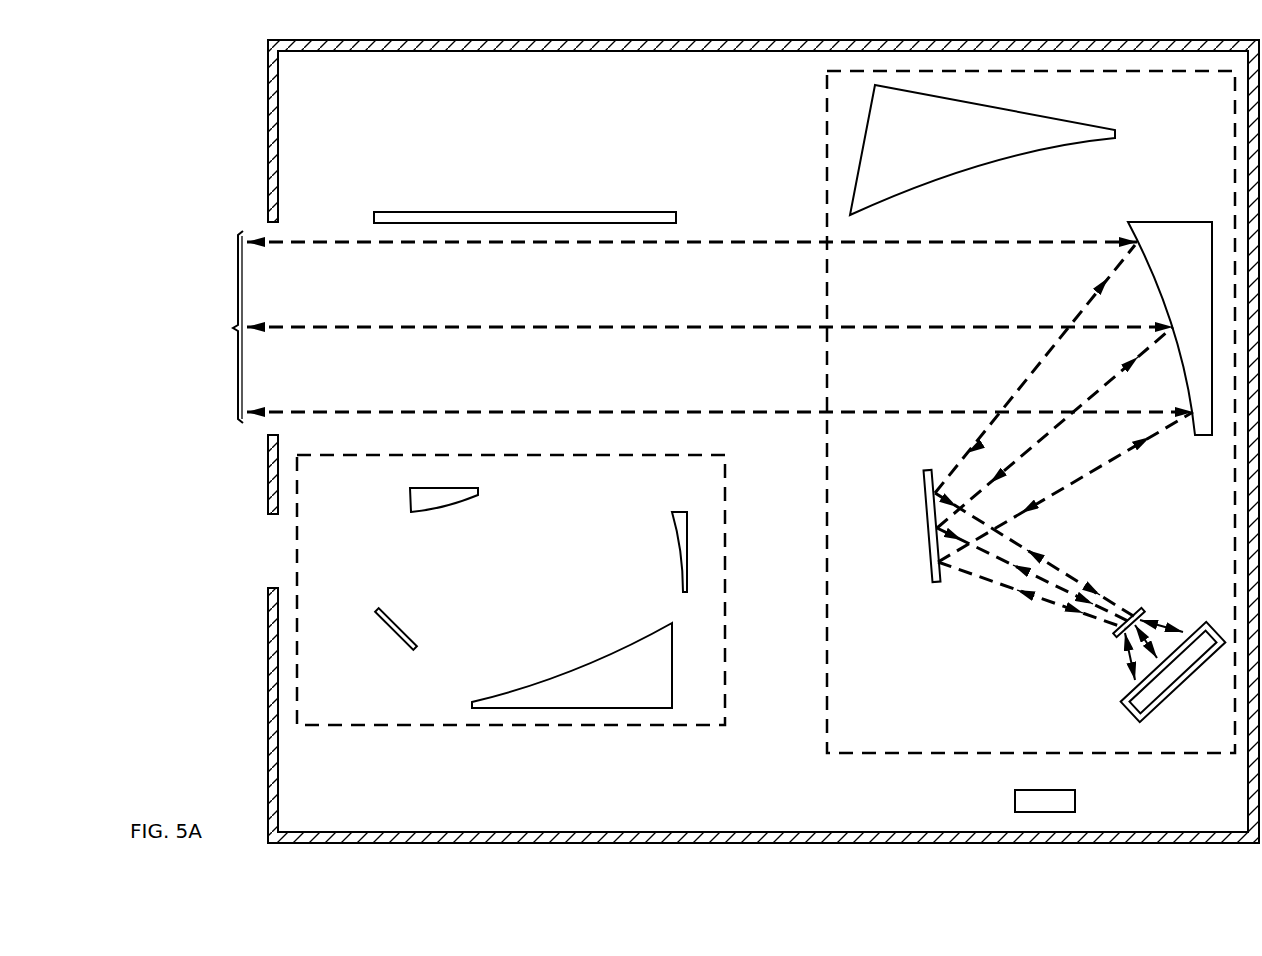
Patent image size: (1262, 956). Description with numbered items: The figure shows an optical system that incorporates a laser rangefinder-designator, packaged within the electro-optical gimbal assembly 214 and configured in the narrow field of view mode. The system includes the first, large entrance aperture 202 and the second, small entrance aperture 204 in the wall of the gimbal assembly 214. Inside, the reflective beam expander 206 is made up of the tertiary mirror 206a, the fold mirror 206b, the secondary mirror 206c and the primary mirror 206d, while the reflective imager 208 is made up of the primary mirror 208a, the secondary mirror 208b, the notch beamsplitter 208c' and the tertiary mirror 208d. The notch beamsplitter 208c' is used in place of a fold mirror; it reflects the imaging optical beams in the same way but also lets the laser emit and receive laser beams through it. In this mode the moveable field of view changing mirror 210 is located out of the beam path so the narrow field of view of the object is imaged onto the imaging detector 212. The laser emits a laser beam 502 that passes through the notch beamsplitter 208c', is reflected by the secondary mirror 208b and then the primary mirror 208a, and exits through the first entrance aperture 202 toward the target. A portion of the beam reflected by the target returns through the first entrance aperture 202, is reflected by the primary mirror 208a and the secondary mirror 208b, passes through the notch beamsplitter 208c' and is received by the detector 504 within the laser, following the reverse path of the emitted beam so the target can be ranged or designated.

The first entrance aperture 202 is at (268, 222).
The second entrance aperture 204 is at (268, 588).
The electro-optical gimbal assembly 214 is at (268, 705).
The moveable field of view changing mirror 210 is at (488, 212).
The imaging detector 212 is at (1076, 800).
The reflective beam expander 206 is at (734, 628).
The tertiary mirror 206a is at (680, 512).
The fold mirror 206b is at (392, 628).
The secondary mirror 206c is at (410, 497).
The primary mirror 206d is at (653, 695).
The reflective imager 208 is at (822, 538).
The primary mirror 208a is at (1175, 221).
The secondary mirror 208b is at (928, 548).
The notch beamsplitter 208c' is at (1159, 628).
The tertiary mirror 208d is at (948, 145).
The laser beam 502 is at (1122, 705).
The detector 504 is at (1167, 697).